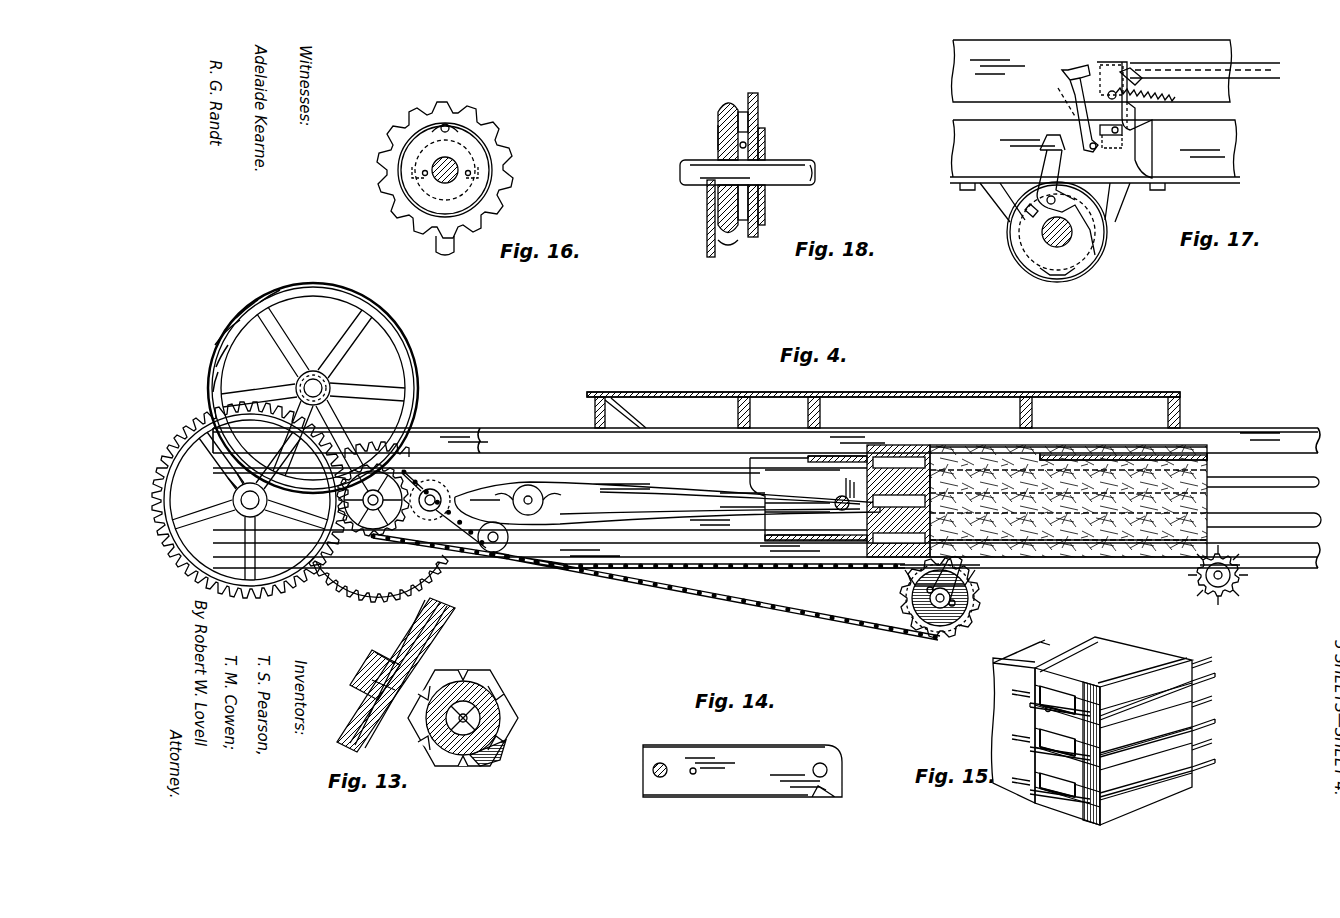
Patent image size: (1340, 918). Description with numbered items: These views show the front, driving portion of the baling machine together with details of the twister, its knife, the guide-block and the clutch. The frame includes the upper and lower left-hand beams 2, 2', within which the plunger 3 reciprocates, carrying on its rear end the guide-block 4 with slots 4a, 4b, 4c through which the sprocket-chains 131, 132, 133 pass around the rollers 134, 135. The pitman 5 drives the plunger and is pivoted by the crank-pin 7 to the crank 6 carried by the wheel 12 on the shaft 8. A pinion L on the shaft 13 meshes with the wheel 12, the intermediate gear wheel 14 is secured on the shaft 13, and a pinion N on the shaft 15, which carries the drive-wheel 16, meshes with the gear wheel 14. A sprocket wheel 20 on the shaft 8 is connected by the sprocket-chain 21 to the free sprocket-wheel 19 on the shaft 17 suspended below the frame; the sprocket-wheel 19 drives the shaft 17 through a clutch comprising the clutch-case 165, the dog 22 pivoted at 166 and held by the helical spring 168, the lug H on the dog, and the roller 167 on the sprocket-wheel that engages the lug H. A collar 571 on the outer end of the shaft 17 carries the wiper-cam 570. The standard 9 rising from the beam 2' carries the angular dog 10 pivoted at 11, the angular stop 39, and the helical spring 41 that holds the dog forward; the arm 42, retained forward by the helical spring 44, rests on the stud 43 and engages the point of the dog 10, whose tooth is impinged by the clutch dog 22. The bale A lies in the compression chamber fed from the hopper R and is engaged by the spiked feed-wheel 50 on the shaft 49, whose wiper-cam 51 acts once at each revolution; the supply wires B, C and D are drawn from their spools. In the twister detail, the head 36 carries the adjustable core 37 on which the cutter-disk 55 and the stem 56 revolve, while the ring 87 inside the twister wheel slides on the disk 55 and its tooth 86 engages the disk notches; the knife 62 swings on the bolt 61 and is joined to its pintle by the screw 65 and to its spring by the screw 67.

In FIG. 4, the upper left beam 2 is at (766, 444).
In FIG. 4, the lower left beam 2' is at (766, 553).
In FIG. 17, the lower left beam 2' is at (1095, 122).
In FIG. 4, the plunger 3 is at (832, 460).
In FIG. 15, the plunger 3 is at (1021, 721).
In FIG. 4, the guide-block 4 is at (867, 445).
In FIG. 15, the guide-block 4 is at (1118, 642).
In FIG. 4, the slot of guide-block 4a is at (905, 450).
In FIG. 15, the slot of guide-block 4a is at (1060, 692).
In FIG. 4, the slot of guide-block 4b is at (867, 510).
In FIG. 15, the slot of guide-block 4b is at (1038, 740).
In FIG. 4, the slot of guide-block 4c is at (875, 565).
In FIG. 15, the slot of guide-block 4c is at (1038, 790).
In FIG. 4, the pitman 5 is at (706, 497).
In FIG. 4, the crank 6 is at (436, 512).
In FIG. 4, the crank-pin 7 is at (440, 494).
In FIG. 4, the shaft 8 is at (370, 506).
In FIG. 17, the standard 9 is at (1138, 108).
In FIG. 14, the standard 9 is at (821, 795).
In FIG. 17, the angular dog 10 is at (1082, 110).
In FIG. 17, the pivot 11 is at (1096, 150).
In FIG. 4, the wheel 12 is at (372, 596).
In FIG. 4, the shaft 13 is at (232, 502).
In FIG. 4, the intermediate gear wheel 14 is at (265, 595).
In FIG. 4, the shaft 15 is at (330, 380).
In FIG. 4, the drive-wheel 16 is at (383, 315).
In FIG. 4, the shaft 17 is at (950, 612).
In FIG. 16, the shaft 17 is at (455, 162).
In FIG. 18, the shaft 17 is at (815, 170).
In FIG. 17, the shaft 17 is at (1045, 240).
In FIG. 4, the free sprocket-wheel 19 is at (978, 598).
In FIG. 16, the free sprocket-wheel 19 is at (383, 195).
In FIG. 18, the free sprocket-wheel 19 is at (735, 240).
In FIG. 4, the sprocket wheel 20 is at (378, 545).
In FIG. 4, the sprocket-chain 21 is at (800, 612).
In FIG. 18, the dog 22 is at (758, 100).
In FIG. 17, the dog 22 is at (1045, 155).
In FIG. 13, the head 36 is at (482, 688).
In FIG. 13, the core 37 is at (520, 722).
In FIG. 17, the angular stop 39 is at (1124, 135).
In FIG. 17, the helical spring 41 is at (1125, 146).
In FIG. 17, the arm 42 is at (1250, 63).
In FIG. 17, the stud 43 is at (1130, 75).
In FIG. 17, the helical spring 44 is at (1162, 86).
In FIG. 4, the shaft 49 is at (1212, 585).
In FIG. 4, the feed-wheel 50 is at (1226, 592).
In FIG. 4, the wiper-cam 51 is at (1240, 567).
In FIG. 13, the cutter-disk 55 is at (494, 764).
In FIG. 13, the stem 56 is at (508, 680).
In FIG. 14, the bolt 61 is at (826, 766).
In FIG. 14, the knife 62 is at (765, 797).
In FIG. 14, the screw 65 is at (693, 775).
In FIG. 14, the screw 67 is at (653, 770).
In FIG. 13, the tooth 86 is at (392, 690).
In FIG. 13, the ring 87 is at (445, 628).
In FIG. 15, the sprocket-chain 131 is at (1012, 692).
In FIG. 15, the sprocket-chain 132 is at (1040, 750).
In FIG. 15, the sprocket-chain 133 is at (1048, 796).
In FIG. 15, the roller 134 is at (1088, 695).
In FIG. 15, the roller 135 is at (1062, 788).
In FIG. 18, the clutch-case 165 is at (765, 210).
In FIG. 17, the clutch-case 165 is at (1095, 262).
In FIG. 18, the pivot 166 is at (762, 150).
In FIG. 17, the pivot 166 is at (1056, 200).
In FIG. 16, the roller 167 is at (450, 124).
In FIG. 18, the roller 167 is at (758, 130).
In FIG. 18, the helical spring 168 is at (748, 222).
In FIG. 17, the helical spring 168 is at (1050, 278).
In FIG. 4, the wiper-cam 570 is at (962, 562).
In FIG. 16, the wiper-cam 570 is at (456, 250).
In FIG. 18, the wiper-cam 570 is at (707, 232).
In FIG. 4, the collar 571 is at (940, 636).
In FIG. 16, the collar 571 is at (485, 128).
In FIG. 4, the bale A is at (1068, 501).
In FIG. 4, the supply wire B is at (1097, 462).
In FIG. 4, the supply wire C is at (975, 483).
In FIG. 4, the supply wire D is at (1110, 548).
In FIG. 18, the lug H is at (716, 140).
In FIG. 17, the lug H is at (1026, 214).
In FIG. 4, the pinion L is at (240, 476).
In FIG. 4, the pinion N is at (300, 382).
In FIG. 4, the hopper R is at (915, 392).